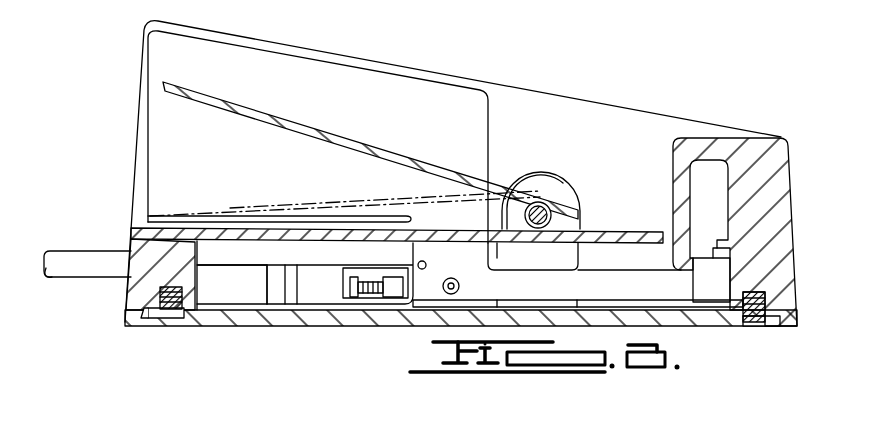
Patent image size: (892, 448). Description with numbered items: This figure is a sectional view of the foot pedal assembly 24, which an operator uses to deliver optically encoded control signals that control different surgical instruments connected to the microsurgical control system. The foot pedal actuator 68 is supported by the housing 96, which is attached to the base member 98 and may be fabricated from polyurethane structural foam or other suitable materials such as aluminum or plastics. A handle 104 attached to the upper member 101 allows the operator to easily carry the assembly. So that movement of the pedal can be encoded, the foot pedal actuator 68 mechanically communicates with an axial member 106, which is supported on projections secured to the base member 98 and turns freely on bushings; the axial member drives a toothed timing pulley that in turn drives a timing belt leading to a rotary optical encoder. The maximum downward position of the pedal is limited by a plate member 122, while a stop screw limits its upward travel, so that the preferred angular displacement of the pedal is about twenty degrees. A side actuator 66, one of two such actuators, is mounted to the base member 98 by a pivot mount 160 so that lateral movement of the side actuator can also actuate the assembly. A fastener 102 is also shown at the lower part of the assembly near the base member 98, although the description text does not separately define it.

The foot pedal assembly 24 is at (100, 62).
The side actuator 66 is at (472, 121).
The foot pedal actuator 68 is at (272, 118).
The housing 96 is at (137, 287).
The base member 98 is at (254, 324).
The upper member 101 is at (755, 158).
The mounting bolt 102 is at (172, 324).
The handle 104 is at (73, 258).
The axial member 106 is at (540, 212).
The plate member 122 is at (253, 236).
The pivot mount 160 is at (700, 265).